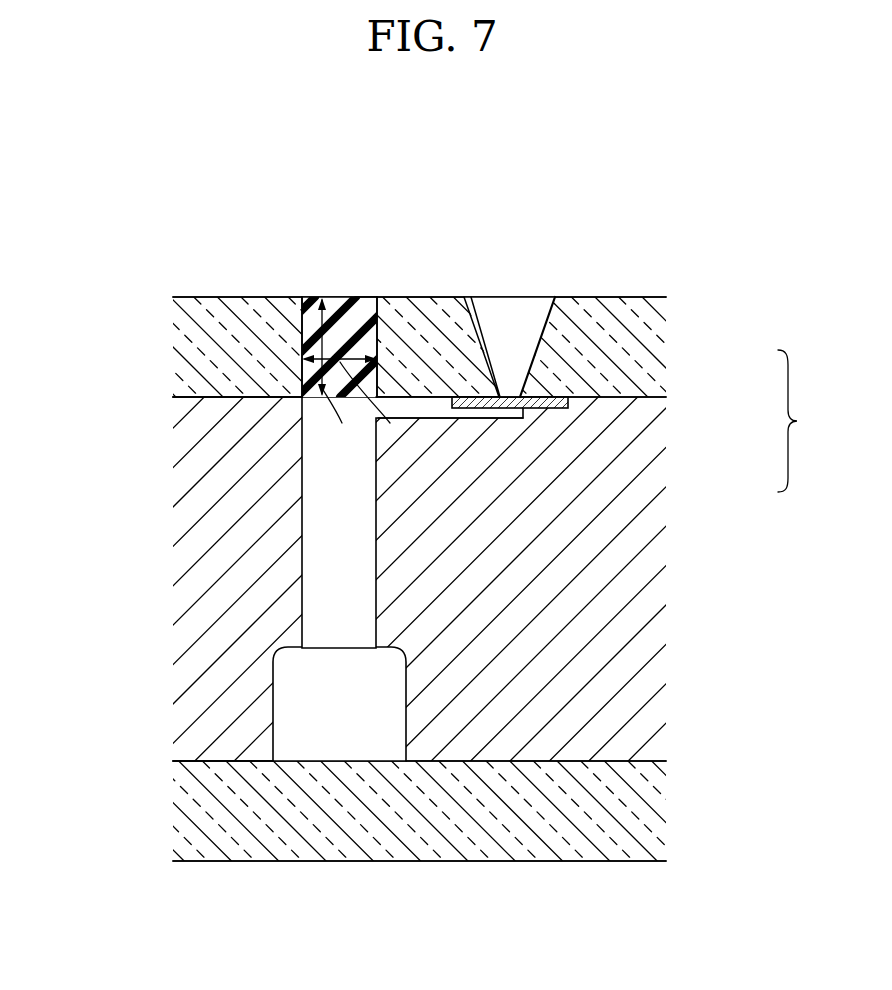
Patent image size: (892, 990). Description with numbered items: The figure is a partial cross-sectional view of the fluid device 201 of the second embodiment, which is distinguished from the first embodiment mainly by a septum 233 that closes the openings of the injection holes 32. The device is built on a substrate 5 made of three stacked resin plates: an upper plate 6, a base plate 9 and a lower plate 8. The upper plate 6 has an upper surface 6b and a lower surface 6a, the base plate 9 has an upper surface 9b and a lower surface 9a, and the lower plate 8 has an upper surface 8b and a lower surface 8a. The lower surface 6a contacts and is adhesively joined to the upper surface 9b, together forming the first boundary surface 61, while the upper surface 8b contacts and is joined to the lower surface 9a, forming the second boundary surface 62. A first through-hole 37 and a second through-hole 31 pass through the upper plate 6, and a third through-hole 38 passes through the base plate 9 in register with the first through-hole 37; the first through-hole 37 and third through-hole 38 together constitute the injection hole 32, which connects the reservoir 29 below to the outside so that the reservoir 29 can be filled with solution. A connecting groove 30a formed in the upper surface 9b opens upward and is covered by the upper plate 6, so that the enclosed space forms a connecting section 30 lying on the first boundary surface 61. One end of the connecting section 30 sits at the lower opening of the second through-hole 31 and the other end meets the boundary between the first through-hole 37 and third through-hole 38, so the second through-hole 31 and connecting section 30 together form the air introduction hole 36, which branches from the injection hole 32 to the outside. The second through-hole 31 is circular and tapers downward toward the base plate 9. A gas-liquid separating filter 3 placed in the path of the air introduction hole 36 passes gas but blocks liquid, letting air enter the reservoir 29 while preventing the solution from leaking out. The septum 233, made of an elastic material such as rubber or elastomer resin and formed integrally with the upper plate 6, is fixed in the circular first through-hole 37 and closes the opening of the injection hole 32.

The fluid device 201 is at (718, 194).
The gas-liquid separating filter 3 is at (543, 400).
The substrate 5 is at (799, 421).
The upper plate 6 is at (623, 362).
The lower surface of the upper plate 6a is at (218, 397).
The upper surface of the upper plate 6b is at (192, 297).
The first boundary surface 61 is at (173, 397).
The second boundary surface 62 is at (173, 761).
The lower plate 8 is at (642, 802).
The lower surface of the lower plate 8a is at (245, 861).
The upper surface of the lower plate 8b is at (193, 761).
The base plate 9 is at (628, 430).
The lower surface of the base plate 9a is at (228, 761).
The upper surface of the base plate 9b is at (240, 397).
The reservoir 29 is at (405, 698).
The connecting section 30 is at (432, 408).
The connecting groove 30a is at (398, 418).
The second through-hole 31 is at (547, 297).
The injection hole 32 is at (278, 165).
The air introduction hole 36 is at (517, 290).
The first through-hole 37 is at (376, 340).
The third through-hole 38 is at (375, 480).
The septum 233 is at (364, 297).